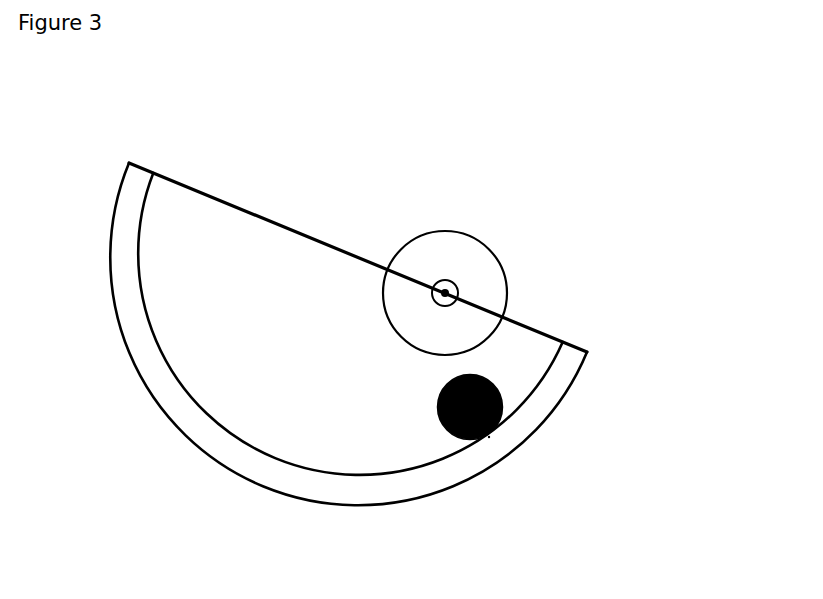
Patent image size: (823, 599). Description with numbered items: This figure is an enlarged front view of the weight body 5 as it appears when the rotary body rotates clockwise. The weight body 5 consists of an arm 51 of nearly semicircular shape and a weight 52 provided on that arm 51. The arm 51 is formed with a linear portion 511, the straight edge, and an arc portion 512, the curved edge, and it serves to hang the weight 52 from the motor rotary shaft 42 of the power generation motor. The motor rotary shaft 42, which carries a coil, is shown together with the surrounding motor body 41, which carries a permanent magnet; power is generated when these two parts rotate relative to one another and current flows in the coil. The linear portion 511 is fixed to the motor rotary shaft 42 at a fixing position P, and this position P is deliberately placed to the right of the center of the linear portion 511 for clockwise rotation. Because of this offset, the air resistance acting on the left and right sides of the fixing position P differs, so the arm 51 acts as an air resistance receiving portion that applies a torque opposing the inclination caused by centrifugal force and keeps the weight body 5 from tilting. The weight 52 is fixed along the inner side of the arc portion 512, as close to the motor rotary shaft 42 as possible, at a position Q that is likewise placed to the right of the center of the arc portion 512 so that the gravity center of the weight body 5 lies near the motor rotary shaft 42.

The weight body 5 is at (414, 319).
The arm 51 is at (337, 340).
The linear portion 511 is at (270, 219).
The arc portion 512 is at (160, 410).
The motor body 41 is at (447, 231).
The motor rotary shaft 42 is at (447, 280).
The fixing position P is at (458, 294).
The weight 52 is at (438, 398).
The weight fixing position Q is at (488, 437).